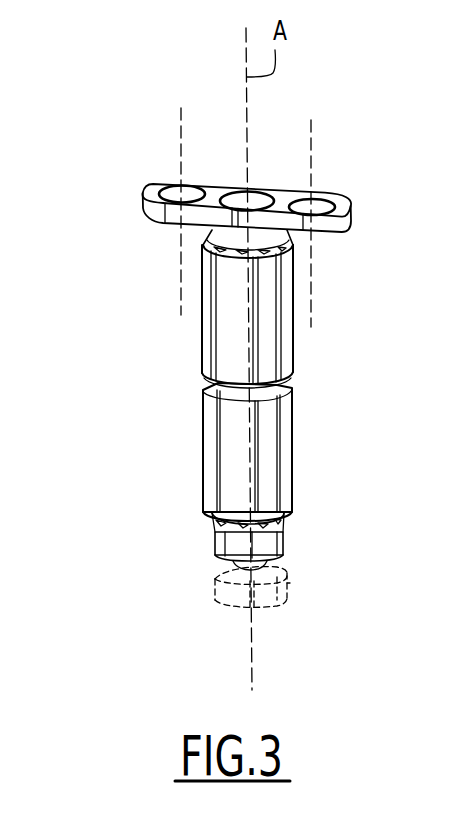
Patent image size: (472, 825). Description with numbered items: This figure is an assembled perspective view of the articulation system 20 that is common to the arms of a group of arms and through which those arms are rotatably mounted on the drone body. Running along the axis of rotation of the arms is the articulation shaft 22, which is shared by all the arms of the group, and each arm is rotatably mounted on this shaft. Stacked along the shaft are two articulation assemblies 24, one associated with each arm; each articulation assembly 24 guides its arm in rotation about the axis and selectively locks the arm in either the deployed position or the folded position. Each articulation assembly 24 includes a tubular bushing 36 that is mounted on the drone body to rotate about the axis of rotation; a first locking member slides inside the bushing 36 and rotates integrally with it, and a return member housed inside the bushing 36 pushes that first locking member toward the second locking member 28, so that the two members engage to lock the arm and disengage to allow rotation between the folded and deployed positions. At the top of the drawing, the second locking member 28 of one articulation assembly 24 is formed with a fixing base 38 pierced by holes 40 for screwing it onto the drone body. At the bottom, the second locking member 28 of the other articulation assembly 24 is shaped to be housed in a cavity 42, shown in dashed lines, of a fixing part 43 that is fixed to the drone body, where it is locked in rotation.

The articulation system 20 is at (122, 390).
The articulation shaft 22 is at (258, 200).
The articulation assembly 24 is at (185, 347).
The second locking member 28 is at (288, 243).
The tubular bushing 36 is at (284, 338).
The fixing base 38 is at (163, 160).
The holes 40 is at (172, 191).
The cavity 42 is at (287, 560).
The fixing part 43 is at (287, 583).